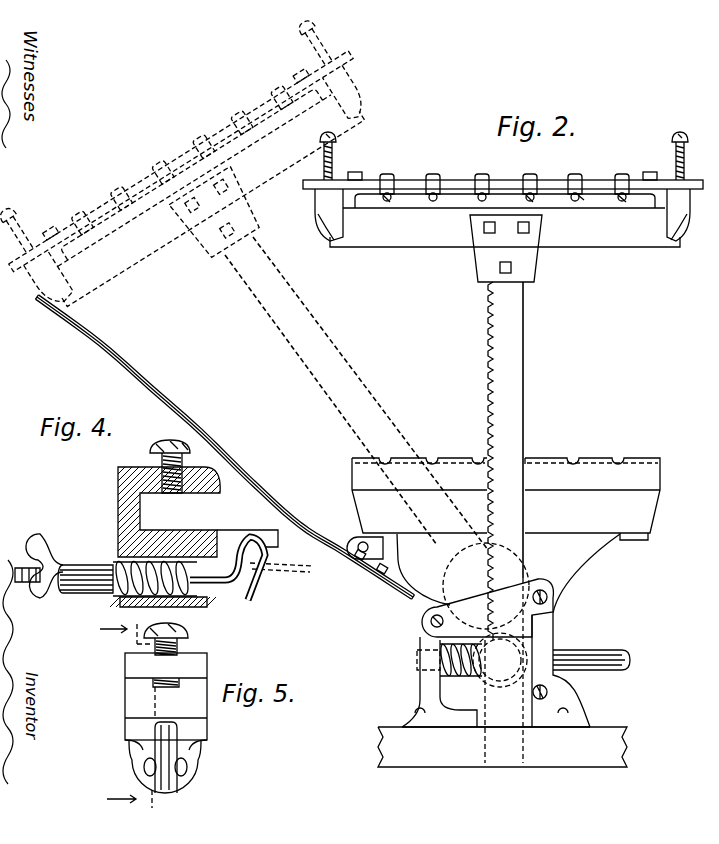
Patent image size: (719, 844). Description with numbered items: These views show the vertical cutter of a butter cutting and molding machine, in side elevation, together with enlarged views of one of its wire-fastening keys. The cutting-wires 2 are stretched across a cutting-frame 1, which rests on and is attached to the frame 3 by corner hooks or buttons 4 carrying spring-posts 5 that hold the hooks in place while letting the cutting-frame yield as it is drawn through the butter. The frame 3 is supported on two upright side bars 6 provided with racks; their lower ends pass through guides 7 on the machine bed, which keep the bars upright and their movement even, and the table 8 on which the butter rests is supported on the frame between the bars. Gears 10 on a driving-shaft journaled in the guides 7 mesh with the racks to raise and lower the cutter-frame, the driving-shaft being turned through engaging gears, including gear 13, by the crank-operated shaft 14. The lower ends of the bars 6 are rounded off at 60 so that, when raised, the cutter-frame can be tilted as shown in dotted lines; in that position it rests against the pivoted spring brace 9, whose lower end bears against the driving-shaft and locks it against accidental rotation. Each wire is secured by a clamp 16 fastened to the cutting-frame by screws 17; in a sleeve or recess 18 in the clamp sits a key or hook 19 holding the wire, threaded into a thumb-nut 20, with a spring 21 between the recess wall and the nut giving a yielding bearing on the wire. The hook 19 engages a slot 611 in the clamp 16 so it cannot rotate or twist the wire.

In FIG. 2, the cutting-frame 1 is at (423, 180).
In FIG. 2, the cutting-wires 2 is at (480, 176).
In FIG. 4, the cutting-wires 2 is at (265, 563).
In FIG. 2, the frame 3 is at (706, 207).
In FIG. 2, the corner hooks or buttons 4 is at (318, 178).
In FIG. 5, the corner hooks or buttons 4 is at (126, 710).
In FIG. 2, the spring-posts 5 is at (337, 141).
In FIG. 2, the upright side bars 6 is at (364, 388).
In FIG. 2, the guides 7 is at (547, 588).
In FIG. 2, the support or table 8 is at (595, 464).
In FIG. 2, the spring brace or support 9 is at (200, 446).
In FIG. 2, the gears 10 is at (422, 617).
In FIG. 2, the gear 13 is at (443, 670).
In FIG. 2, the shaft 14 is at (622, 649).
In FIG. 2, the adjustable supports or clamps 16 is at (413, 183).
In FIG. 4, the adjustable supports or clamps 16 is at (117, 497).
In FIG. 5, the adjustable supports or clamps 16 is at (125, 703).
In FIG. 2, the screws 17 is at (388, 176).
In FIG. 4, the screws 17 is at (150, 447).
In FIG. 5, the screws 17 is at (188, 637).
In FIG. 4, the sleeve or recess 18 is at (118, 563).
In FIG. 4, the key or hook 19 is at (277, 604).
In FIG. 5, the key or hook 19 is at (186, 757).
In FIG. 4, the thumb-nut 20 is at (70, 598).
In FIG. 4, the spring 21 is at (195, 605).
In FIG. 5, the spring 21 is at (205, 729).
In FIG. 2, the cut-away or rounded-off lower ends of rack-bars 60 is at (510, 757).
In FIG. 4, the slot 611 is at (222, 548).
In FIG. 5, the slot 611 is at (150, 718).